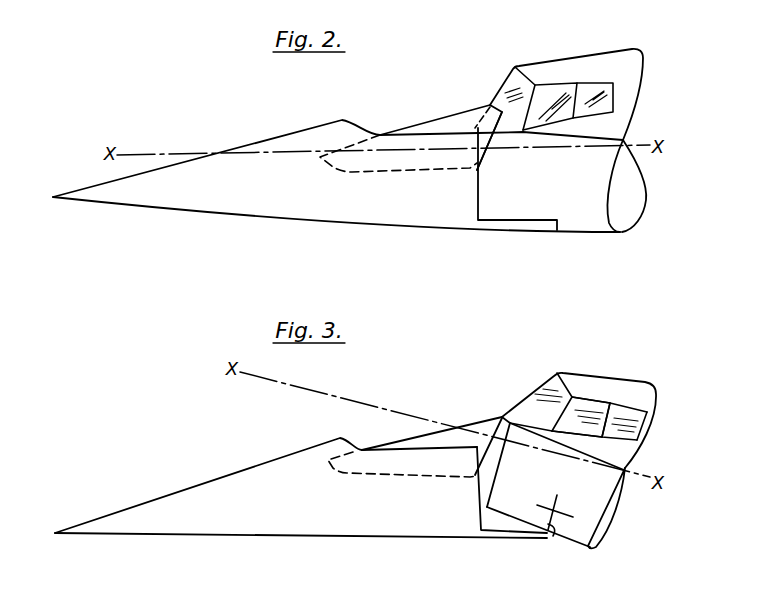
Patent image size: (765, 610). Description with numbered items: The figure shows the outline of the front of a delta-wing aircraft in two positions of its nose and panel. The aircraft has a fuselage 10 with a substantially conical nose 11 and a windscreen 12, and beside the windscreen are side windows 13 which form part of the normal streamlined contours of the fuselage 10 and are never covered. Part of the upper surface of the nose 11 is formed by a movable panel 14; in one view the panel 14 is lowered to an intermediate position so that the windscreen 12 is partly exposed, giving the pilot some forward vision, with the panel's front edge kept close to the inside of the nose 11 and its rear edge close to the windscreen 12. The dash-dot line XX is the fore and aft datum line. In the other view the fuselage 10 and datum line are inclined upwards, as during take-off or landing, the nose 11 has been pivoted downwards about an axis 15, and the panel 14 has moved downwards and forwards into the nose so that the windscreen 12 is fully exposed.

In FIG. 2, the fuselage 10 is at (588, 90).
In FIG. 3, the fuselage 10 is at (627, 397).
In FIG. 2, the nose 11 is at (203, 165).
In FIG. 3, the nose 11 is at (222, 480).
In FIG. 2, the windscreen 12 is at (500, 92).
In FIG. 3, the windscreen 12 is at (527, 396).
In FIG. 2, the side windows 13 is at (542, 92).
In FIG. 3, the side windows 13 is at (578, 405).
In FIG. 2, the movable panel 14 is at (438, 125).
In FIG. 3, the movable panel 14 is at (413, 443).
In FIG. 3, the axis 15 is at (548, 534).